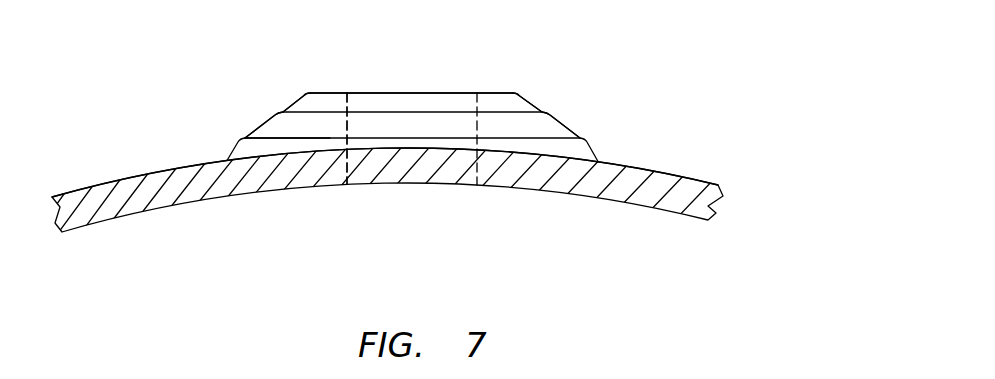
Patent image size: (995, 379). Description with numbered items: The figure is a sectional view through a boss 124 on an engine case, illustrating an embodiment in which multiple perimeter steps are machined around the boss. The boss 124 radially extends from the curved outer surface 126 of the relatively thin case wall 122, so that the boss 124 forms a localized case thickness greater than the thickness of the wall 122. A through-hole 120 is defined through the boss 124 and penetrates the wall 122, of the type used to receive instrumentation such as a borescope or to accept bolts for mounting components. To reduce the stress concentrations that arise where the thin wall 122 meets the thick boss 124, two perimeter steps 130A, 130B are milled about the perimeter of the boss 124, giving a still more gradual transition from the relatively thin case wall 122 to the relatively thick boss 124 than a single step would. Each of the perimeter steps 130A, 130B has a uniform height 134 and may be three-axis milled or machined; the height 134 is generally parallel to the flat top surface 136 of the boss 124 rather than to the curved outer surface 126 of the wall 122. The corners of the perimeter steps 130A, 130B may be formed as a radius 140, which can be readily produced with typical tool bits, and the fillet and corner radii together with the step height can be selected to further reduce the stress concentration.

The through-hole 120 is at (476, 131).
The wall 122 is at (738, 205).
The boss 124 is at (500, 88).
The outer surface 126 is at (660, 175).
The perimeter step 130A is at (255, 118).
The perimeter step 130B is at (291, 95).
The height 134 is at (287, 138).
The flat top surface 136 is at (338, 93).
The radius 140 is at (523, 106).